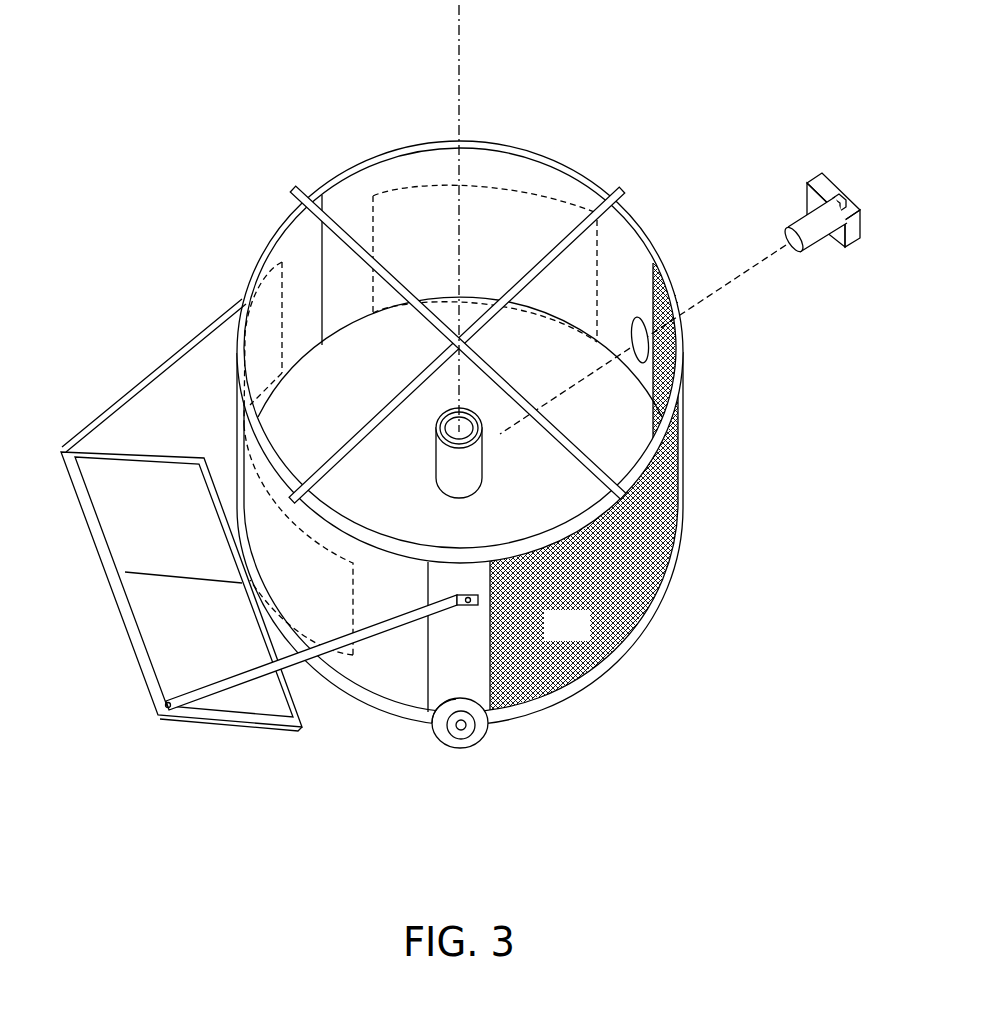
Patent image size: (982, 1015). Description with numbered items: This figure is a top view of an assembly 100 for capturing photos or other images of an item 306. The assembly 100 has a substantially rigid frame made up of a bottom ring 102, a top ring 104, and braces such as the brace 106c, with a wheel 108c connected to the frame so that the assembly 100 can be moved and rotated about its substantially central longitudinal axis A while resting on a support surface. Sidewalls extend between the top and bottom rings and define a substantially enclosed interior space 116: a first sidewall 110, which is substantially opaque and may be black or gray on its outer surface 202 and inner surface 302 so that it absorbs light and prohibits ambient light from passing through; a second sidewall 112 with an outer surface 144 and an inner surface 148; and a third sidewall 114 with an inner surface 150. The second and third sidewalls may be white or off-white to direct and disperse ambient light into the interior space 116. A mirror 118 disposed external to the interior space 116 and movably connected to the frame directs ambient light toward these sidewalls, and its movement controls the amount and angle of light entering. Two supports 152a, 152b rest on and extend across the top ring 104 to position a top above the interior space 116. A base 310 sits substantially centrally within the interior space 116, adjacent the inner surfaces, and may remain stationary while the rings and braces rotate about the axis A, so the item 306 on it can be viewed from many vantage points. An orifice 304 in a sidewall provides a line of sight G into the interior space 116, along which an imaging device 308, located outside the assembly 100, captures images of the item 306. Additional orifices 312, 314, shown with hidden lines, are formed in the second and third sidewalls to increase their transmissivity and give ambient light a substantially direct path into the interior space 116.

The assembly 100 is at (745, 402).
The bottom ring 102 is at (617, 665).
The top ring 104 is at (645, 460).
The brace 106c is at (465, 652).
The wheel 108c is at (477, 730).
The first sidewall 110 is at (585, 638).
The second sidewall 112 is at (322, 336).
The third sidewall 114 is at (644, 281).
The interior space 116 is at (568, 186).
The mirror 118 is at (163, 447).
The outer surface 144 is at (397, 657).
The inner surface 148 is at (298, 245).
The inner surface 150 is at (492, 168).
The support 152a is at (618, 187).
The support 152b is at (297, 189).
The outer surface 202 is at (645, 548).
The inner surface 302 is at (672, 345).
The orifice 304 is at (637, 318).
The item 306 is at (443, 458).
The imaging device 308 is at (844, 238).
The base 310 is at (530, 521).
The additional orifice 312 is at (287, 305).
The additional orifice 314 is at (447, 180).
The longitudinal axis A is at (459, 51).
The line of sight G is at (597, 398).